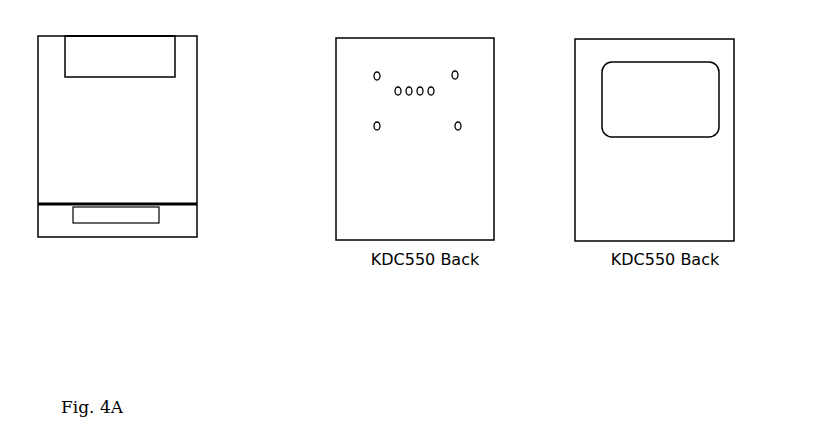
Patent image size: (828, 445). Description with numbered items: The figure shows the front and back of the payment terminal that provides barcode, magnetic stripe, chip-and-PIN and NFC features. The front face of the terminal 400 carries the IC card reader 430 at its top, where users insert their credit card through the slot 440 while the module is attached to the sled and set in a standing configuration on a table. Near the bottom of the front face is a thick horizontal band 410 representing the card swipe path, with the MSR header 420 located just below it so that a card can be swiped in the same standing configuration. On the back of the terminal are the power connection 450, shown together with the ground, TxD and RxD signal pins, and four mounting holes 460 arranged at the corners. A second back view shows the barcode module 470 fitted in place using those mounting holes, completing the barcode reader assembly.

The KDC550 device (front) 400 is at (200, 121).
The magnetic stripe reader slot 410 is at (200, 204).
The MSR header 420 is at (163, 215).
The IC card reader 430 is at (167, 55).
The IC card insertion slot 440 is at (157, 36).
The power signal connection 450 is at (417, 78).
The mounting holes 460 is at (381, 83).
The barcode module 470 is at (659, 61).